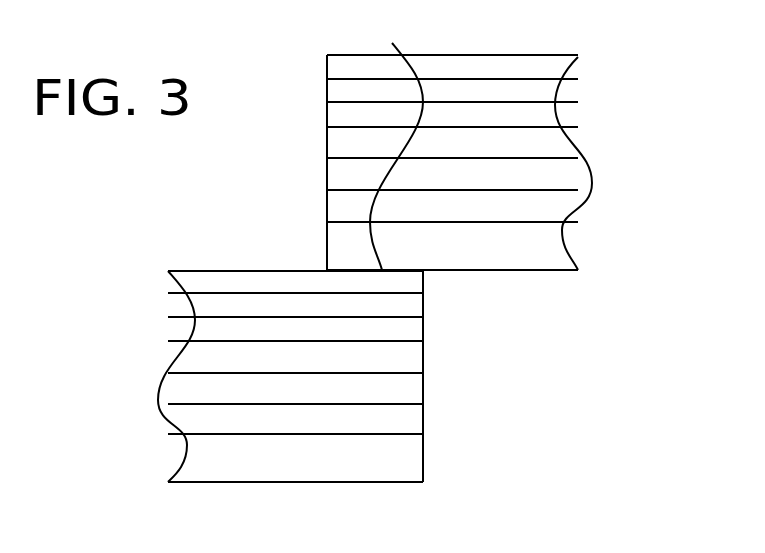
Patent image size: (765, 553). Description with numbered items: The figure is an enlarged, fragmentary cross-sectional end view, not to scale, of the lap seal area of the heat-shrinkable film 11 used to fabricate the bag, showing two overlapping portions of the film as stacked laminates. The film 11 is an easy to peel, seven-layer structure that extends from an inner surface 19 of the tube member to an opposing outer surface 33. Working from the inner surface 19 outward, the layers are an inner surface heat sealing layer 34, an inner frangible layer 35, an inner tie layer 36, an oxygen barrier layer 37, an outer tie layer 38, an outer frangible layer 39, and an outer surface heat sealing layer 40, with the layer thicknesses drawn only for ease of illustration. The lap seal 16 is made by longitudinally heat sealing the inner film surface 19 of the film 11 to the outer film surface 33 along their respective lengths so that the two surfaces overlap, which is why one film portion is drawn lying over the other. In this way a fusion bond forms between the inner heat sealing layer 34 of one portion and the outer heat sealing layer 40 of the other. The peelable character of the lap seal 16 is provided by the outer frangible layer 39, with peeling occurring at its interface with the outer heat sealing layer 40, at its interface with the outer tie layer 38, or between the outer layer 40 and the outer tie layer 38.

The heat-shrinkable film 11 is at (612, 55).
The lap seal 16 is at (395, 137).
The inner surface 19 is at (535, 270).
The outer surface 33 is at (540, 55).
The inner surface heat sealing layer 34 is at (343, 246).
The inner frangible layer 35 is at (343, 206).
The inner tie layer 36 is at (343, 174).
The oxygen barrier layer 37 is at (343, 143).
The outer tie layer 38 is at (343, 115).
The outer frangible layer 39 is at (343, 90).
The outer surface heat sealing layer 40 is at (343, 65).